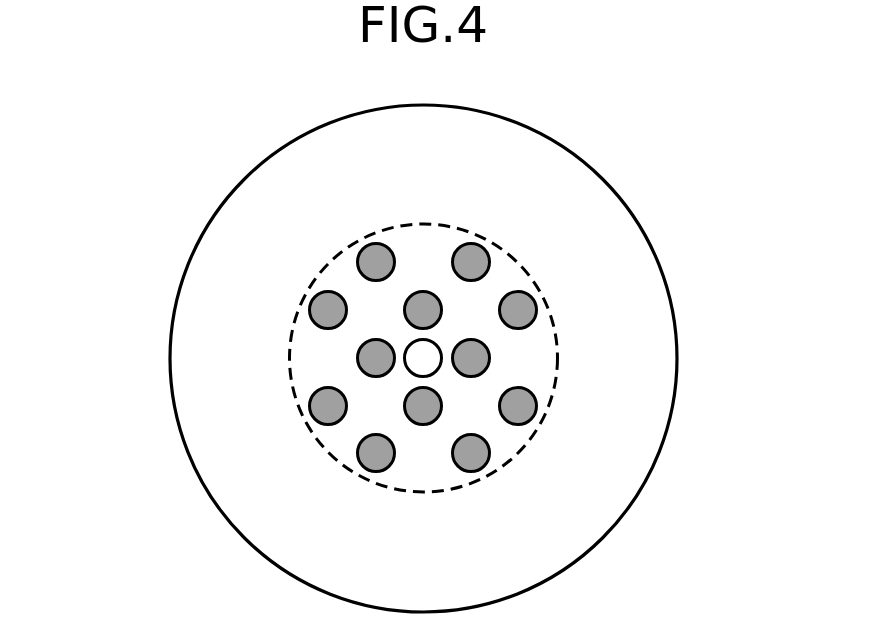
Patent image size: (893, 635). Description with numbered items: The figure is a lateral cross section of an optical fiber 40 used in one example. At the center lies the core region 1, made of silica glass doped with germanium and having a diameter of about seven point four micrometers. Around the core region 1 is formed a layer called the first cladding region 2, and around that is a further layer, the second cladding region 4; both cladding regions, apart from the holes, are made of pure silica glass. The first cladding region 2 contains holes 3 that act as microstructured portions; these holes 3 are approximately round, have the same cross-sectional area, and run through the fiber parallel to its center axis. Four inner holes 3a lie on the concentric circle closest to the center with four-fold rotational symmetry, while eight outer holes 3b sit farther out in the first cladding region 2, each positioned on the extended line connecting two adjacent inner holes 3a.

The optical fiber 40 is at (206, 227).
The core region 1 is at (424, 357).
The first cladding region 2 is at (537, 357).
The holes 3 is at (372, 246).
The holes (inner) 3a is at (376, 358).
The holes (outer) 3b is at (330, 403).
The second cladding region 4 is at (593, 443).